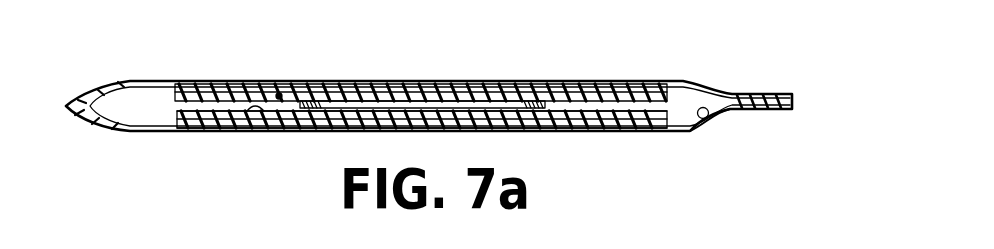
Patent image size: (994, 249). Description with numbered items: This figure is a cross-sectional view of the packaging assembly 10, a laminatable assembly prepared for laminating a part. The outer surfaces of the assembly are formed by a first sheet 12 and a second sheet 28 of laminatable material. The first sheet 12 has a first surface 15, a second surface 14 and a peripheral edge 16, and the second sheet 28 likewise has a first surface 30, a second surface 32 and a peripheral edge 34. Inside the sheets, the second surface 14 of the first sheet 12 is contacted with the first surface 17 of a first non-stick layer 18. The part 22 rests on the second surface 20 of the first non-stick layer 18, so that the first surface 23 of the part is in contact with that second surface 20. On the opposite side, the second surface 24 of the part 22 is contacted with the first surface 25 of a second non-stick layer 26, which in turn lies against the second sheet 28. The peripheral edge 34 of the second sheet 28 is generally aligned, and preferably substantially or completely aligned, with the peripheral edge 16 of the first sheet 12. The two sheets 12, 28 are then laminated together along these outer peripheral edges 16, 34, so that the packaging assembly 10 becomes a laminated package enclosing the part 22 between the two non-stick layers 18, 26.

The packaging assembly 10 is at (733, 68).
The first sheet 12 is at (152, 132).
The second surface of the first sheet 14 is at (708, 118).
The first surface of the first sheet 15 is at (668, 130).
The peripheral edge of the first sheet 16 is at (794, 108).
The first surface of the first non-stick layer 17 is at (200, 128).
The first non-stick layer 18 is at (623, 124).
The second surface of the first non-stick layer 20 is at (262, 118).
The part 22 is at (530, 102).
The first surface of the part 23 is at (545, 113).
The second surface of the part 24 is at (425, 100).
The first surface of the second non-stick layer 25 is at (279, 96).
The second non-stick layer 26 is at (625, 92).
The second sheet 28 is at (114, 91).
The first surface of the second sheet 30 is at (145, 95).
The second surface of the second sheet 32 is at (172, 82).
The peripheral edge of the second sheet 34 is at (792, 99).